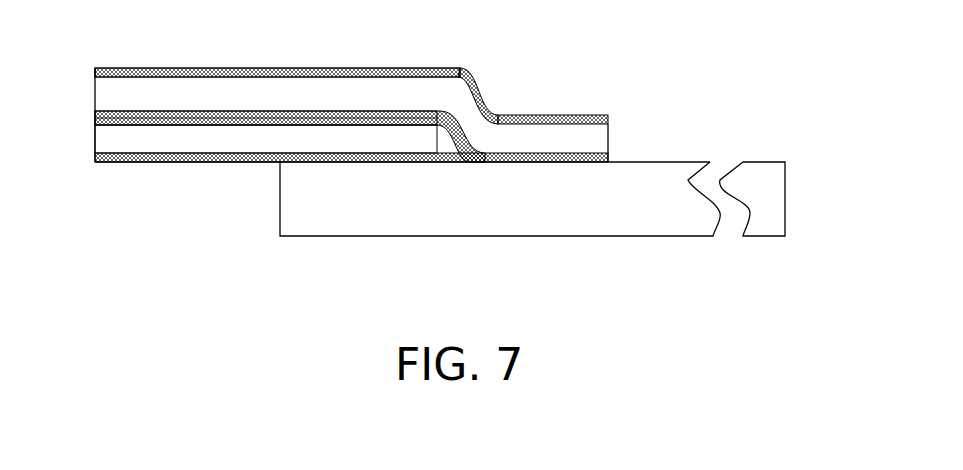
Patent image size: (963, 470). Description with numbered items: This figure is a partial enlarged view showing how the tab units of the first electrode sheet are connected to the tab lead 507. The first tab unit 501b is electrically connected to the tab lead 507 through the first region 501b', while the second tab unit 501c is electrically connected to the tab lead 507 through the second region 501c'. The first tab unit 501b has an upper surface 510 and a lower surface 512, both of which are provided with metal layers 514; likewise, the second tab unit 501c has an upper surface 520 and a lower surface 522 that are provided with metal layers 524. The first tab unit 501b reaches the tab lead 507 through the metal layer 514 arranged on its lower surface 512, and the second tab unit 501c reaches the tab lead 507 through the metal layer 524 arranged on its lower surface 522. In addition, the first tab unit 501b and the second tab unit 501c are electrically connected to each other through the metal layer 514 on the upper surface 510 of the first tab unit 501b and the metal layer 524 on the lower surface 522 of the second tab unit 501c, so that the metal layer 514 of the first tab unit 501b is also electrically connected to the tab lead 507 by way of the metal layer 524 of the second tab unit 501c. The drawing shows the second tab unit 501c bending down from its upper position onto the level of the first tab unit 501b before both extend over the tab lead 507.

The tab lead 507 is at (775, 198).
The upper surface 510 is at (155, 158).
The lower surface 512 is at (225, 160).
The metal layer 514 is at (108, 120).
The upper surface 520 is at (320, 73).
The lower surface 522 is at (277, 108).
The metal layer 524 is at (160, 111).
The first tab unit 501b is at (266, 193).
The first region 501b' is at (500, 217).
The second tab unit 501c is at (478, 79).
The second region 501c' is at (553, 118).